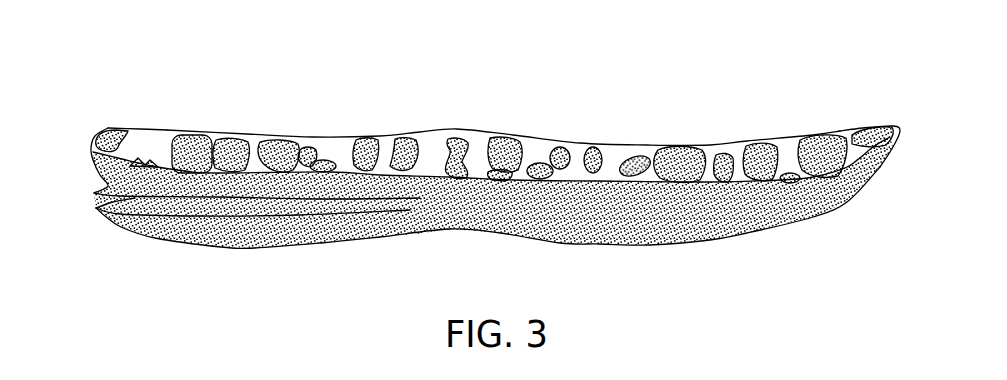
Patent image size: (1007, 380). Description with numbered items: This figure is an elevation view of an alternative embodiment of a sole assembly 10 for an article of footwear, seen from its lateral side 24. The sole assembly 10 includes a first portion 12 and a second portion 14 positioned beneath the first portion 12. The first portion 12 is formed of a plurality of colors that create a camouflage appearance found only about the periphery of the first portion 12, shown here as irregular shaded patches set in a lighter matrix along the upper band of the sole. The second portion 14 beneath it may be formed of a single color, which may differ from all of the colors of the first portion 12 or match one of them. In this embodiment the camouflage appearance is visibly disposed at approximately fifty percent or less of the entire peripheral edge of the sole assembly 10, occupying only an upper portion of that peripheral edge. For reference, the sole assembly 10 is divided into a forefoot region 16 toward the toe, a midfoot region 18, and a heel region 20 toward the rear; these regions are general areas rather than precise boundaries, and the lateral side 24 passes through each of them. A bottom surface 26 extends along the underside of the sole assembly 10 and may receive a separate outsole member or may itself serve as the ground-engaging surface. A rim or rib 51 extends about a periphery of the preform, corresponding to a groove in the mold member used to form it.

The sole assembly 10 is at (777, 61).
The first portion 12 is at (528, 143).
The second portion 14 is at (243, 249).
The forefoot region 16 is at (827, 133).
The midfoot region 18 is at (454, 129).
The heel region 20 is at (166, 128).
The lateral side 24 is at (663, 224).
The bottom surface 26 is at (777, 228).
The rim or rib 51 is at (317, 142).